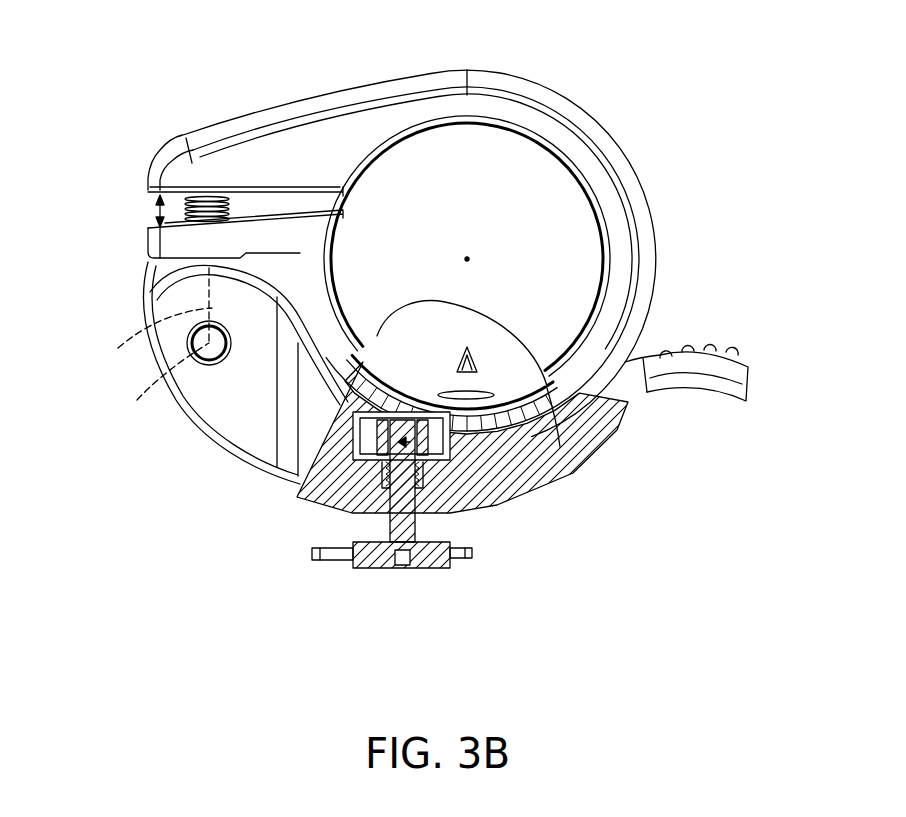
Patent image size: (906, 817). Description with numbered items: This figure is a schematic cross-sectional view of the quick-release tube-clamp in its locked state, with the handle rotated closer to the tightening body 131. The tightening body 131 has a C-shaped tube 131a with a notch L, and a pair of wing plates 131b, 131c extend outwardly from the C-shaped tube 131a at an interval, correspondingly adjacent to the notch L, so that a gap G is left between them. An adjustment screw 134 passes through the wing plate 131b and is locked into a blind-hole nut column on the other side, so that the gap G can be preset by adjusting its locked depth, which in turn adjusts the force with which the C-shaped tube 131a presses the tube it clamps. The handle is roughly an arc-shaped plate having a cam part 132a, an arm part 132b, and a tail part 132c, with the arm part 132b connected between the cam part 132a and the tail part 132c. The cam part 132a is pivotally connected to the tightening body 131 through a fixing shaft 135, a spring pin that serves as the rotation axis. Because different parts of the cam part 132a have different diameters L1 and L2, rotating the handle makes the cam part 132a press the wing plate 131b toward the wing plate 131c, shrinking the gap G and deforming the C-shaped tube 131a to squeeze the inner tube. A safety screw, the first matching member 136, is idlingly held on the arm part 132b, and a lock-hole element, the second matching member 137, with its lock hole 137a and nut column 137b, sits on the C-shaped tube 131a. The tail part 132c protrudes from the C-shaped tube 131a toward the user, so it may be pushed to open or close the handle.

The tightening body 131 is at (389, 230).
The C-shaped tube 131a is at (552, 103).
The wing plate 131b is at (190, 173).
The wing plate 131c is at (198, 237).
The cam part 132a is at (260, 437).
The arm part 132b is at (455, 520).
The tail part 132c is at (720, 345).
The adjustment screw 134 is at (225, 200).
The fixing shaft 135 is at (210, 353).
The first matching member 136 is at (375, 568).
The second matching member 137 is at (482, 452).
The lock hole 137a is at (487, 447).
The nut column 137b is at (450, 490).
The gap G is at (155, 206).
The notch L is at (272, 205).
The diameter L1 is at (153, 325).
The diameter L2 is at (160, 387).